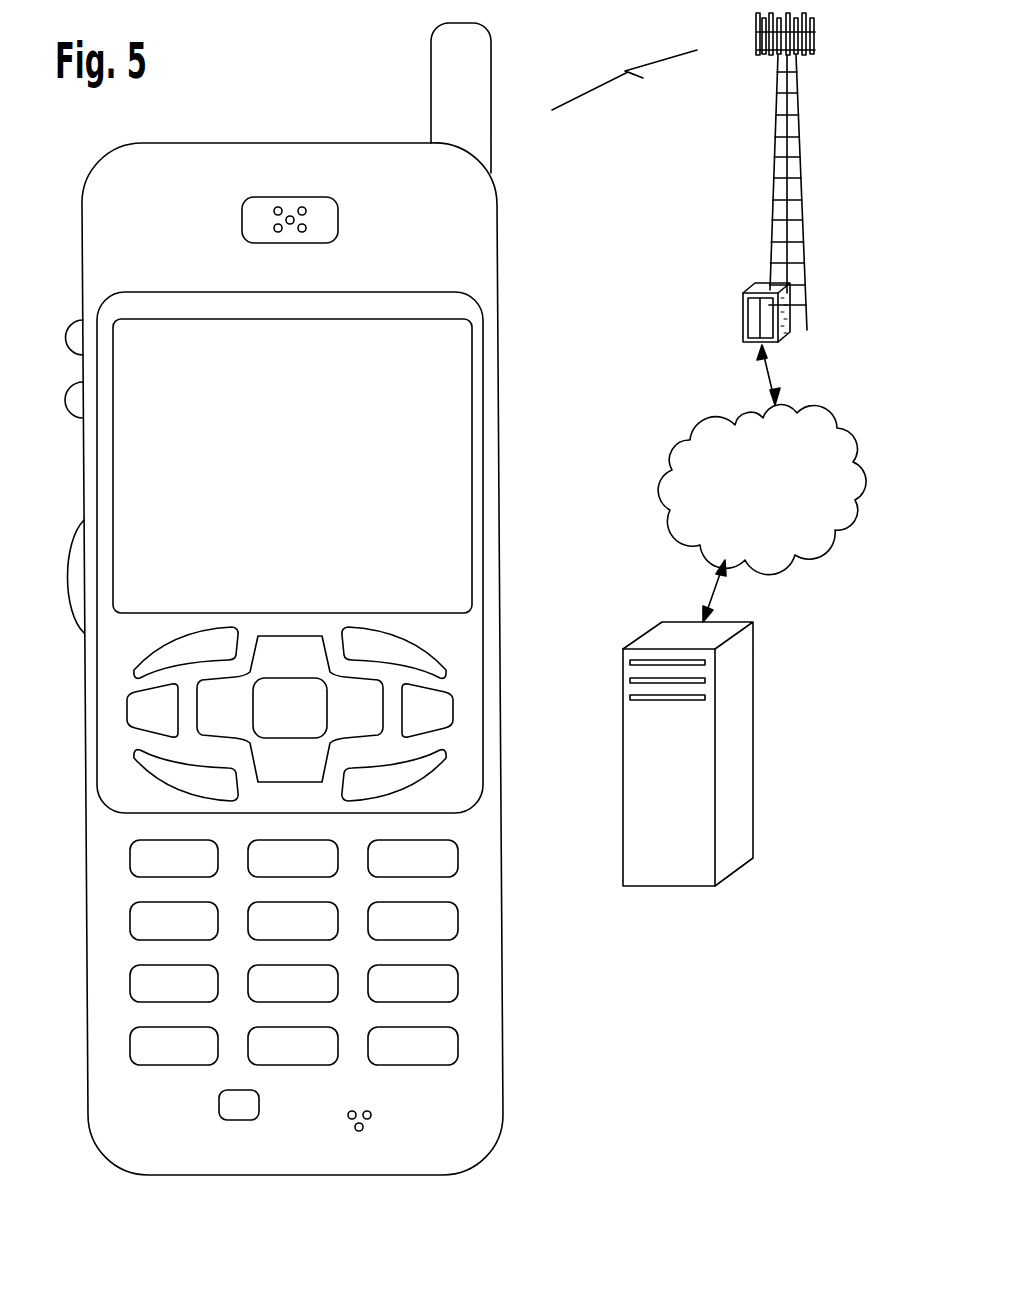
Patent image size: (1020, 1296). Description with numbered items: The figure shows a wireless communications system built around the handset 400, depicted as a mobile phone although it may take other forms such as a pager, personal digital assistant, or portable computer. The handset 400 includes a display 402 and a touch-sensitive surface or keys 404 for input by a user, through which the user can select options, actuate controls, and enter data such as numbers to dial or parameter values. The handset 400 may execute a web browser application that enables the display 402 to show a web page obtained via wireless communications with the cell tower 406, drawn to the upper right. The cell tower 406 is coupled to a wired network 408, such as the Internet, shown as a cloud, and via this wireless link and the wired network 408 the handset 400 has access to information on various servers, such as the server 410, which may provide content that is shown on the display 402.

The handset 400 is at (136, 1176).
The display 402 is at (470, 330).
The keys 404 is at (512, 624).
The cell tower 406 is at (770, 190).
The wired network 408 is at (682, 534).
The server 410 is at (666, 887).